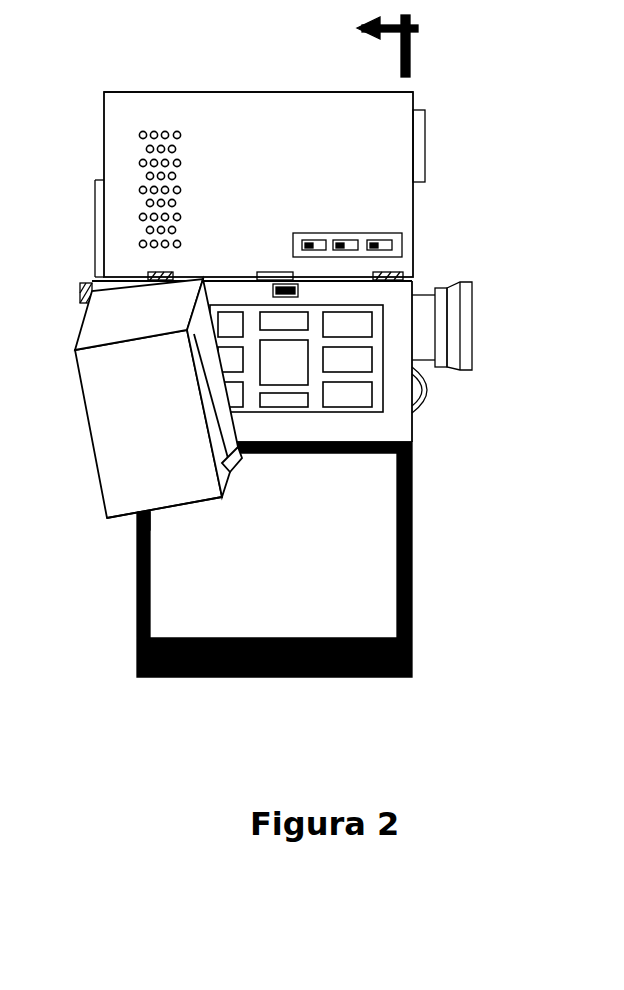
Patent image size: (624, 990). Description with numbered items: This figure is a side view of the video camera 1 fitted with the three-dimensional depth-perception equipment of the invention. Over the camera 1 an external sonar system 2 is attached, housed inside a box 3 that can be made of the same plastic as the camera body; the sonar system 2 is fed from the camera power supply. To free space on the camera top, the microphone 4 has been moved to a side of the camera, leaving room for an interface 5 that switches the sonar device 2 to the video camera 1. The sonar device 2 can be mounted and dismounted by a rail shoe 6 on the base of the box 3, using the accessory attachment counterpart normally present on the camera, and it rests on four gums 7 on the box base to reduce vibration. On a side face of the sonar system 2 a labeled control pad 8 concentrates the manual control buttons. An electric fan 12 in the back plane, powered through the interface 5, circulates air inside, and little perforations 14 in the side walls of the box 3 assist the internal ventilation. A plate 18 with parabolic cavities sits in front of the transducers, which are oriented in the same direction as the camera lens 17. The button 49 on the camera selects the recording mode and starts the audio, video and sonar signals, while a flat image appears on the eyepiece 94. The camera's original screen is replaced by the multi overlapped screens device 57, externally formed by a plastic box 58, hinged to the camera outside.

The video camera 1 is at (407, 590).
The external sonar system 2 is at (215, 90).
The box 3 is at (303, 118).
The microphone 4 is at (303, 293).
The interface 5 is at (298, 276).
The rail shoe 6 is at (361, 280).
The gums 7 is at (138, 281).
The control pad 8 is at (333, 146).
The electric fan 12 is at (427, 148).
The perforations 14 is at (150, 140).
The lens 17 is at (79, 307).
The plate 18 is at (96, 188).
The button 49 is at (430, 402).
The multi overlapped screens device 57 is at (104, 522).
The plastic box 58 is at (124, 450).
The camera eyepiece 94 is at (430, 357).